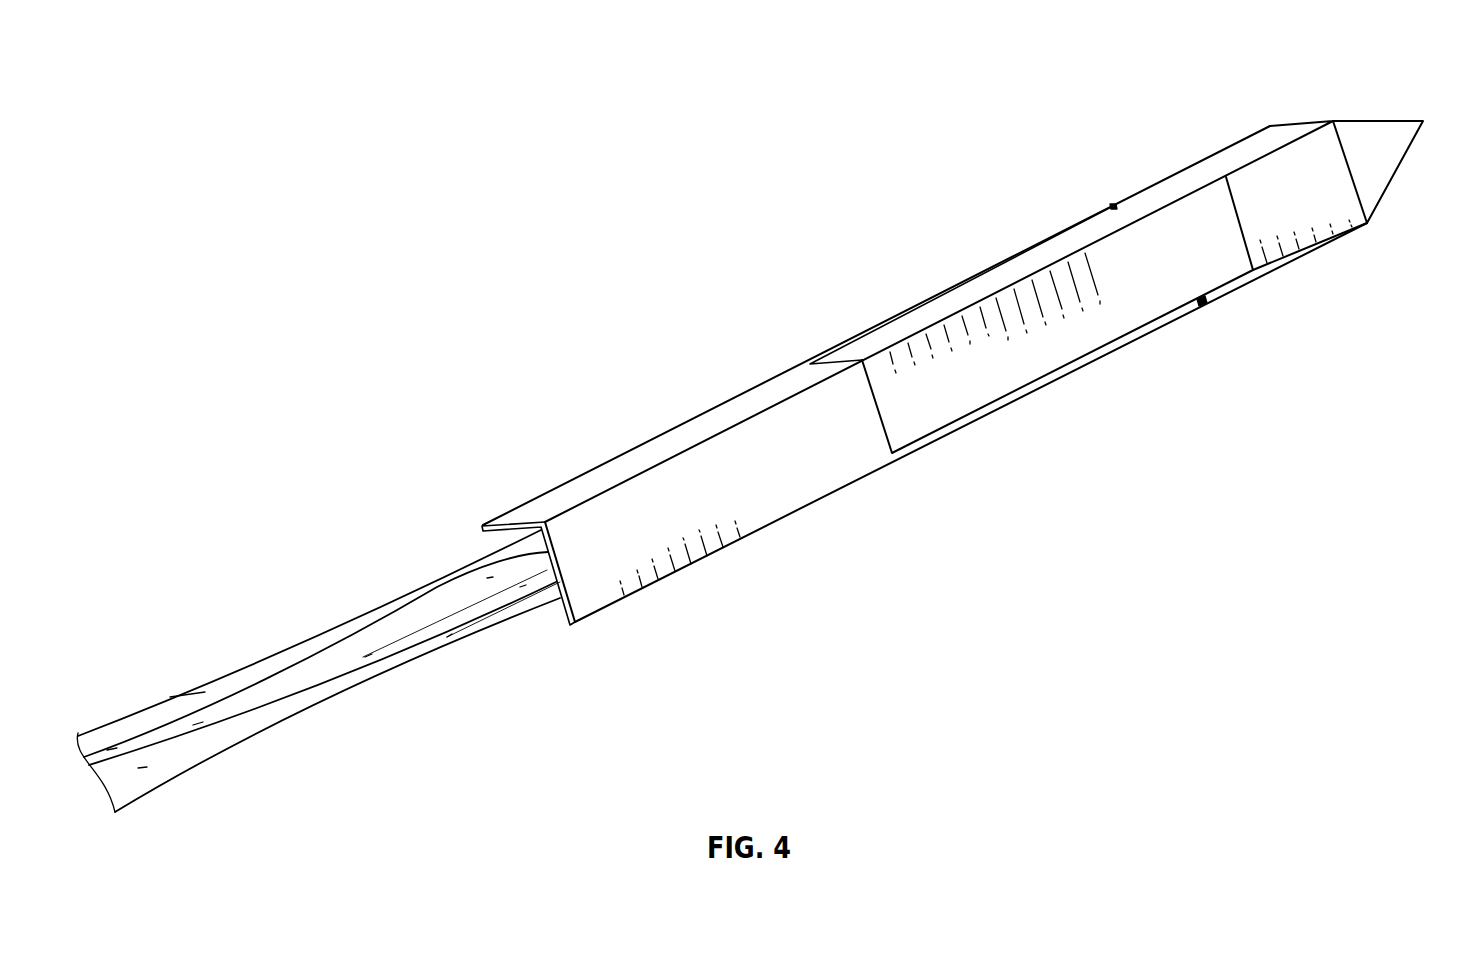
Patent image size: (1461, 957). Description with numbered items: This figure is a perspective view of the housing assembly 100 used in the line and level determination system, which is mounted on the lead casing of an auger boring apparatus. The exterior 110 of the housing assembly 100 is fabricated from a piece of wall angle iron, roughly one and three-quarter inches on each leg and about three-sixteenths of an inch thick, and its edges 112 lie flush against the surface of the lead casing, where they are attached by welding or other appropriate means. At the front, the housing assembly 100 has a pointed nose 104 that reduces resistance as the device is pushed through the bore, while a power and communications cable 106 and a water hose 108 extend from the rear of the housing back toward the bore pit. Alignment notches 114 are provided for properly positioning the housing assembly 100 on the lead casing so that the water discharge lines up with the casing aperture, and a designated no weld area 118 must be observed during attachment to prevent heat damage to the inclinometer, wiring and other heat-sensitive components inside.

The housing assembly 100 is at (809, 348).
The pointed nose 104 is at (1357, 136).
The power and communications cable 106 is at (227, 683).
The water hose 108 is at (273, 703).
The exterior 110 is at (737, 432).
The edges 112 is at (490, 524).
The alignment notches 114 is at (1208, 304).
The no weld area 118 is at (937, 378).